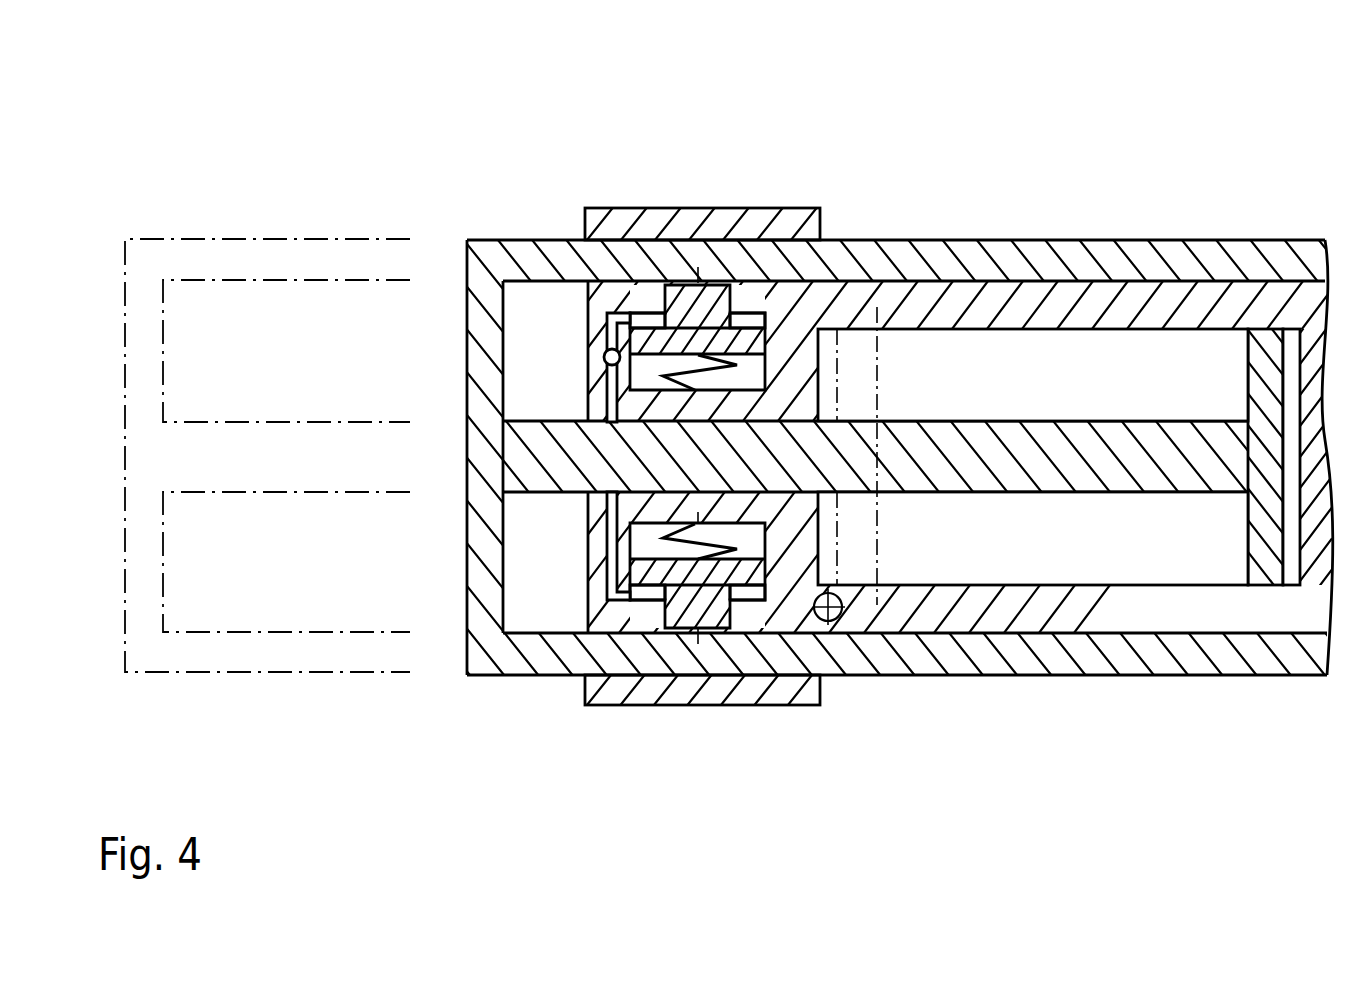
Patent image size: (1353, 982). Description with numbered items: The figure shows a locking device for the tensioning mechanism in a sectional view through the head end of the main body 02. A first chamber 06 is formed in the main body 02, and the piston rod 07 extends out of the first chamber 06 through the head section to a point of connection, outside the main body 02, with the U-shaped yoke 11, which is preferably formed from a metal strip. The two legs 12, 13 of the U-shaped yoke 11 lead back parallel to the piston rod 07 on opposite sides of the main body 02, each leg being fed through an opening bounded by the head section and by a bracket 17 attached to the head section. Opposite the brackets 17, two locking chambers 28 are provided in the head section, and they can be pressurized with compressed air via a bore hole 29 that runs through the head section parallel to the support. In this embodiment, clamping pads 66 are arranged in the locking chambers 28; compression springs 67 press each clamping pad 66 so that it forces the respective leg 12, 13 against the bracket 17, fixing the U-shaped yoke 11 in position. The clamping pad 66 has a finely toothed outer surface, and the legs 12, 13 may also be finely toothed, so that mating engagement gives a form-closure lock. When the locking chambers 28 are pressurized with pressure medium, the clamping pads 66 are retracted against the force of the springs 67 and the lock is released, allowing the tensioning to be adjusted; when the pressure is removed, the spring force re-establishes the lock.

The main body 02 is at (890, 87).
The first chamber 06 is at (1049, 382).
The piston rod 07 is at (1053, 482).
The U-shaped yoke 11 is at (472, 267).
The leg 12 is at (1165, 667).
The leg 13 is at (1198, 250).
The bracket 17 is at (657, 220).
The locking chamber 28 is at (750, 318).
The bore hole 29 is at (606, 354).
The clamping pad 66 is at (718, 287).
The compression spring 67 is at (660, 372).